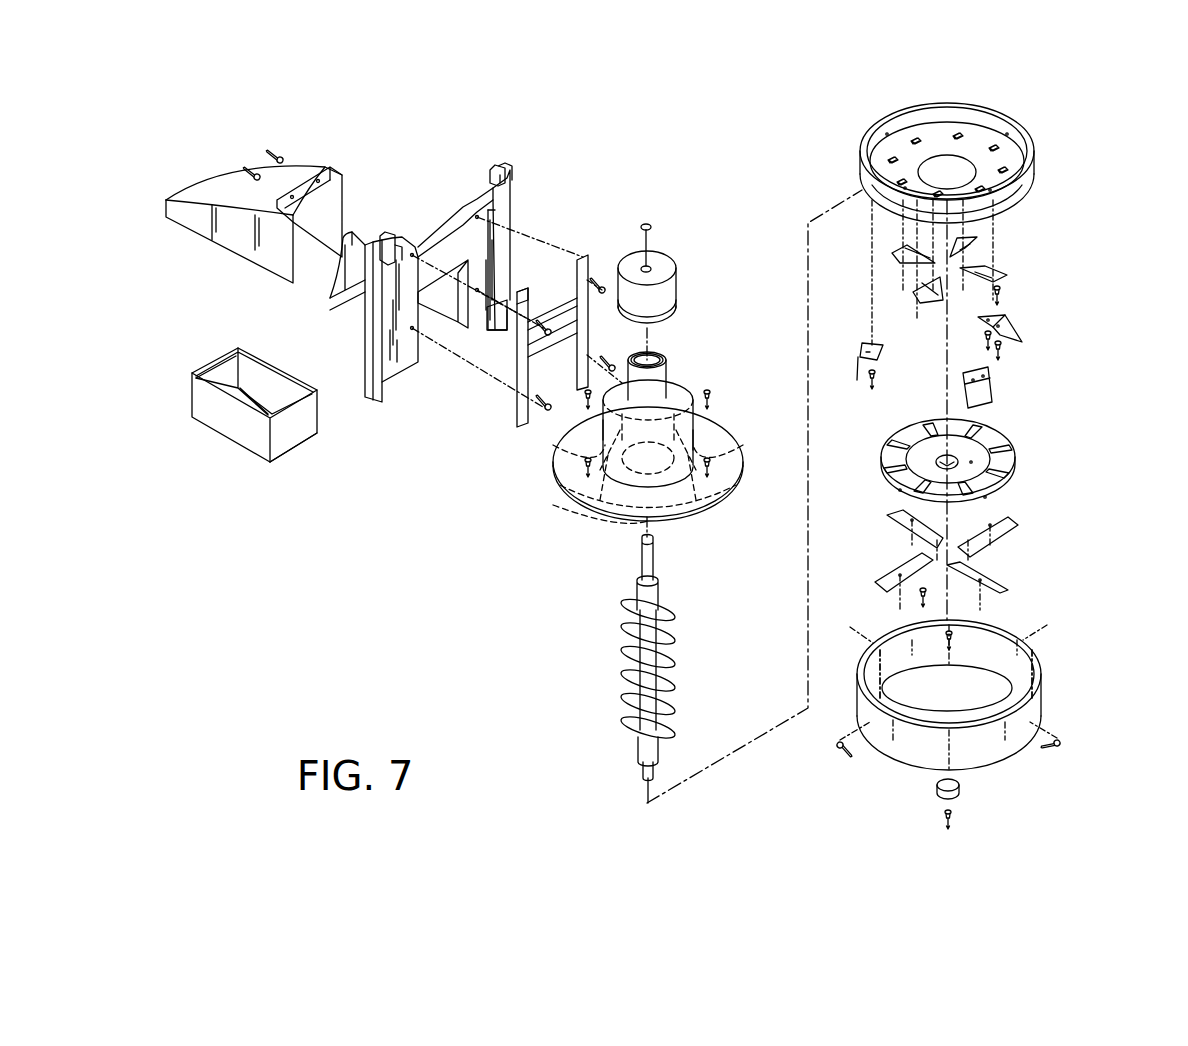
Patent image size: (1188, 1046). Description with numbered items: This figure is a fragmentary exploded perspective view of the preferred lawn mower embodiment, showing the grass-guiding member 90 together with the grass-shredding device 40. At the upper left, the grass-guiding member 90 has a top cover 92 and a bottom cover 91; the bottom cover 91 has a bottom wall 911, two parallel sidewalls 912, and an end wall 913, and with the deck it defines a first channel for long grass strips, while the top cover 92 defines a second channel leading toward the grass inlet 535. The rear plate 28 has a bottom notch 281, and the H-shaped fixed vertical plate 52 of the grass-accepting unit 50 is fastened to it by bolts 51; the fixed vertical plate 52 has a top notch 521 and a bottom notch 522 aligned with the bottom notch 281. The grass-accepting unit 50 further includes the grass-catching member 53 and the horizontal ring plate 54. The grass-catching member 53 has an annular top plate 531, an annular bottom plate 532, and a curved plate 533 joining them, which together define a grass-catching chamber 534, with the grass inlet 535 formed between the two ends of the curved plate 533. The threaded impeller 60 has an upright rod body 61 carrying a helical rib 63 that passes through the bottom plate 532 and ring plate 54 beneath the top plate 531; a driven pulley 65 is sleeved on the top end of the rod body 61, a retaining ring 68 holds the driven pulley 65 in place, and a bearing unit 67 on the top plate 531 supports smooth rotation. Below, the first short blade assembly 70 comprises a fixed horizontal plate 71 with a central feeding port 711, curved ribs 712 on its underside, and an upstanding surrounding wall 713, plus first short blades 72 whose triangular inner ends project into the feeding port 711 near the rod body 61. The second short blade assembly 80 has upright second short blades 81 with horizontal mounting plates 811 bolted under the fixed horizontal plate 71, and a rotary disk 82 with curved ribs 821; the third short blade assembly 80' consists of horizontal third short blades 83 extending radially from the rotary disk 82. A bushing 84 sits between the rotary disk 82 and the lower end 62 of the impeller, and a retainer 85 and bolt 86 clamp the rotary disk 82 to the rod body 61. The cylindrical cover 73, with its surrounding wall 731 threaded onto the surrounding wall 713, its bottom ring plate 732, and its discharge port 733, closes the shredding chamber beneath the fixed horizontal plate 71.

The top cover 92 is at (207, 197).
The grass-guiding member 90 is at (343, 182).
The bottom cover 91 is at (252, 345).
The bottom wall 911 is at (262, 378).
The sidewalls 912 is at (283, 392).
The end wall 913 is at (318, 440).
The rear plate 28 is at (507, 215).
The bottom notch 281 is at (490, 330).
The fixed vertical plate 52 is at (584, 257).
The top notch 521 is at (563, 300).
The bottom notch 522 is at (535, 320).
The bolts 51 is at (598, 285).
The driven pulley 65 is at (670, 288).
The retaining ring 68 is at (654, 226).
The bearing unit 67 is at (668, 376).
The grass-accepting unit 50 is at (619, 432).
The grass-catching member 53 is at (695, 383).
The annular top plate 531 is at (605, 425).
The curved plate 533 is at (700, 437).
The grass inlet 535 is at (580, 456).
The horizontal ring plate 54 is at (745, 462).
The annular bottom plate 532 is at (700, 505).
The grass-catching chamber 534 is at (600, 506).
The threaded impeller 60 is at (652, 669).
The rod body 61 is at (640, 558).
The helical rib 63 is at (625, 668).
The bushing 84 is at (638, 745).
The lower end 62 is at (640, 771).
The grass-shredding device 40 is at (976, 167).
The first short blade assembly 70 is at (1040, 172).
The fixed horizontal plate 71 is at (1035, 196).
The feeding port 711 is at (962, 178).
The curved ribs 712 is at (990, 135).
The surrounding wall 713 is at (900, 114).
The first short blades 72 is at (1003, 273).
The second short blades 81 is at (1020, 338).
The horizontal mounting plates 811 is at (995, 375).
The second short blade assembly 80 is at (999, 505).
The rotary disk 82 is at (1012, 470).
The curved ribs 821 is at (1010, 432).
The third short blades 83 is at (1000, 544).
The third short blade assembly 80' is at (1101, 568).
The cylindrical cover 73 is at (1043, 692).
The surrounding wall 731 is at (1040, 712).
The bottom ring plate 732 is at (990, 702).
The discharge port 733 is at (1000, 672).
The retainer 85 is at (960, 790).
The bolt 86 is at (952, 818).